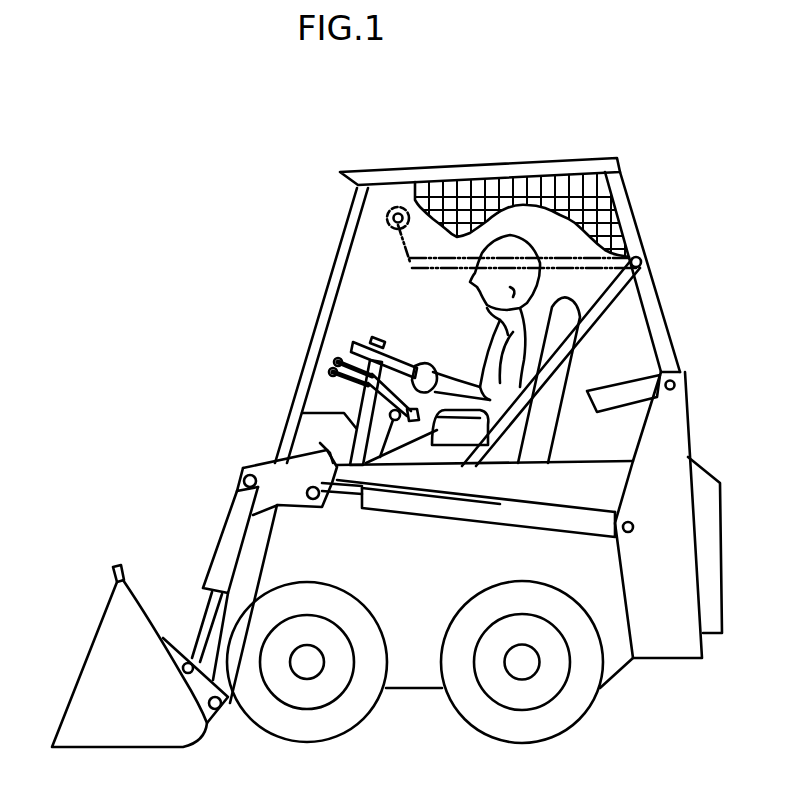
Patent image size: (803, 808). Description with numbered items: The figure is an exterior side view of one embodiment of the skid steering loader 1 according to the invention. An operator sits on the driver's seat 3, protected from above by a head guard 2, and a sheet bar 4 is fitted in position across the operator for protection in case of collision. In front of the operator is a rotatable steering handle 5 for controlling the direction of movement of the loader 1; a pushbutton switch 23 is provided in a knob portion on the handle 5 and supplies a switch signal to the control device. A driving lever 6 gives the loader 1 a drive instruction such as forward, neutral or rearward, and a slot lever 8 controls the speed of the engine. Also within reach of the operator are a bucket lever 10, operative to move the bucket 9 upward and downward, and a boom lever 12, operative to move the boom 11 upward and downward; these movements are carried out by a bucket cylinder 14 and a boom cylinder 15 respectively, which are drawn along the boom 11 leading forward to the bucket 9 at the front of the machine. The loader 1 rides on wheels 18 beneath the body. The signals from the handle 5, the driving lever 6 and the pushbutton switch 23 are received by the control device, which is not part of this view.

The skid steering loader 1 is at (317, 268).
The head guard 2 is at (563, 160).
The driver's seat 3 is at (547, 408).
The sheet bar 4 is at (598, 306).
The steering handle 5 is at (388, 350).
The driving lever 6 is at (400, 366).
The slot lever 8 is at (355, 440).
The bucket 9 is at (117, 677).
The bucket lever 10 is at (340, 359).
The boom 11 is at (610, 397).
The boom lever 12 is at (352, 384).
The bucket cylinder 14 is at (224, 552).
The boom cylinder 15 is at (470, 518).
The wheel 18 is at (352, 702).
The pushbutton switch 23 is at (382, 335).